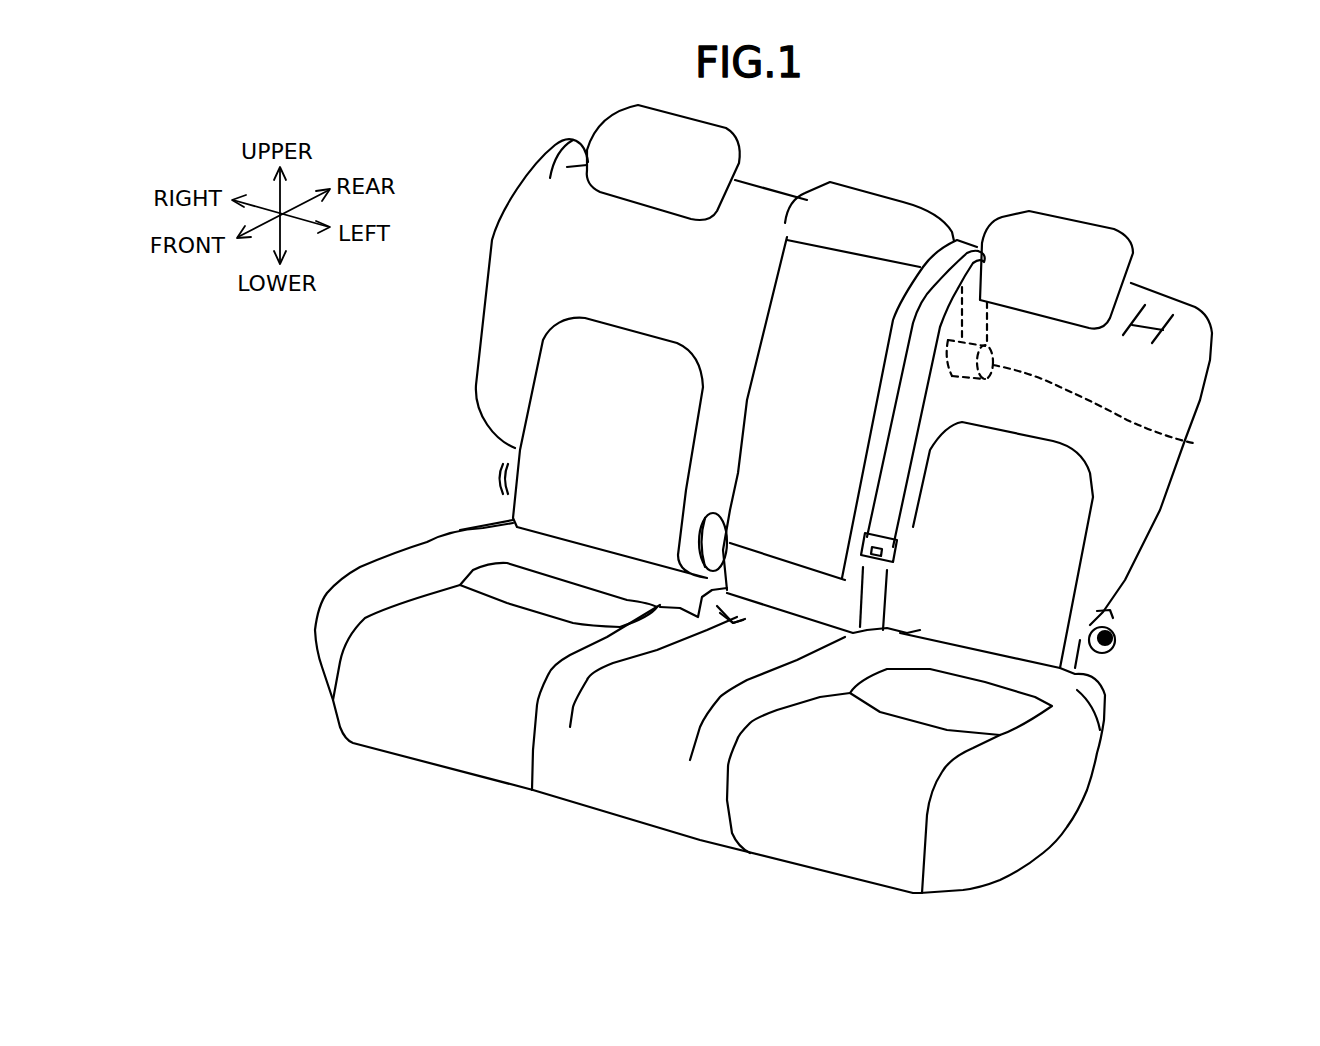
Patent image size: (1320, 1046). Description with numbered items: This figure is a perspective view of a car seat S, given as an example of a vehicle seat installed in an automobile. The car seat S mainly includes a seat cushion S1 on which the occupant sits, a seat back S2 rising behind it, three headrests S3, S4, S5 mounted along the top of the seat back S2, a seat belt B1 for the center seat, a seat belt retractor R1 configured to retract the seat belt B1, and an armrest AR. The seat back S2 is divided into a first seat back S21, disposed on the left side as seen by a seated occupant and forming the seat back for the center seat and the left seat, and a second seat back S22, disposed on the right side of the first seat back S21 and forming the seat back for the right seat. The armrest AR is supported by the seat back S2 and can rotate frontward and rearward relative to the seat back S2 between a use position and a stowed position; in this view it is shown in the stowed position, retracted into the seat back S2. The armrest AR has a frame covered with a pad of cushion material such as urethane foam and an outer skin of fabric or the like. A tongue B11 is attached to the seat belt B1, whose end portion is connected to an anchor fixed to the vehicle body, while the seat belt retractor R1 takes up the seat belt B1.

The car seat S is at (1097, 190).
The seat cushion S1 is at (378, 532).
The seat back S2 is at (458, 332).
The first seat back S21 is at (1180, 374).
The second seat back S22 is at (560, 232).
The headrest S3 is at (1103, 253).
The headrest S4 is at (893, 210).
The headrest S5 is at (713, 138).
The armrest AR is at (830, 317).
The seat belt B1 is at (897, 477).
The tongue B11 is at (900, 553).
The seat belt retractor R1 is at (1092, 374).